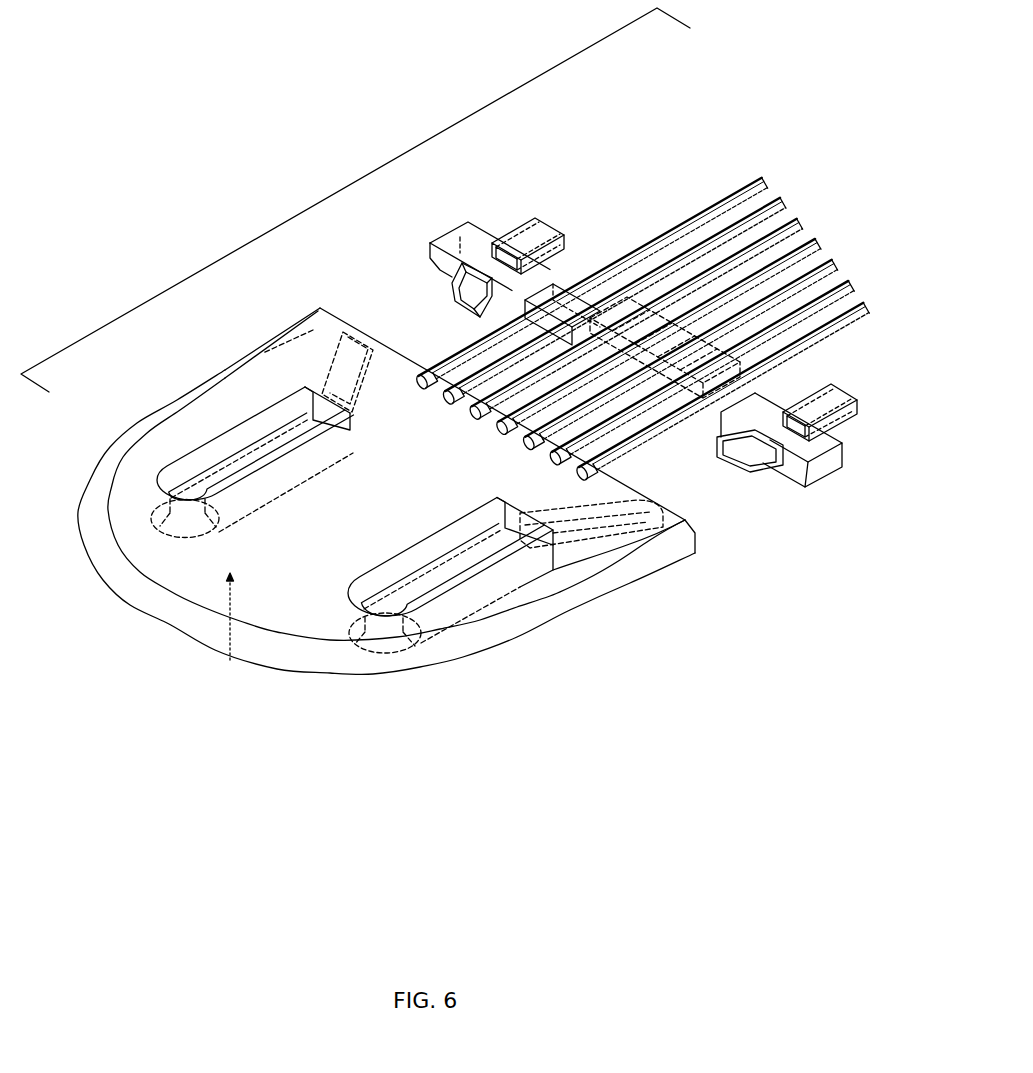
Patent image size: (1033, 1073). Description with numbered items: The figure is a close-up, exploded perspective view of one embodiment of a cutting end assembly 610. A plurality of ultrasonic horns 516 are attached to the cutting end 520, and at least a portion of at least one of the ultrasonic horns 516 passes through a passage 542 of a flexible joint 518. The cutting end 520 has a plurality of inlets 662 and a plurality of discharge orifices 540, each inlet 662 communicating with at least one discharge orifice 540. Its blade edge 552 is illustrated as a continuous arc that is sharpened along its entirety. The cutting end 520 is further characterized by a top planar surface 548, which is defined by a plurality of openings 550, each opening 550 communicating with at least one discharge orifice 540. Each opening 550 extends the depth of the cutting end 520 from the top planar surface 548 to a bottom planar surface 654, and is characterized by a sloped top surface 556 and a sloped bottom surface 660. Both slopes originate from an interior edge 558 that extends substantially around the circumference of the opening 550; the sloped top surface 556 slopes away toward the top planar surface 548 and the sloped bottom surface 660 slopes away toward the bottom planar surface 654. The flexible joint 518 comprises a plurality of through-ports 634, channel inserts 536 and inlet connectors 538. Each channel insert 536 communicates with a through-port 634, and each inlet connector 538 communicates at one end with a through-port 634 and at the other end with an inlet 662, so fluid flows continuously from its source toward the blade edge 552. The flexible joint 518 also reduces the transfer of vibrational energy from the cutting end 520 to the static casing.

The ultrasonic horns 516 is at (722, 204).
The flexible joint 518 is at (847, 478).
The cutting end 520 is at (133, 712).
The channel inserts 536 is at (537, 220).
The inlet connectors 538 is at (522, 325).
The discharge orifices 540 is at (312, 398).
The passage 542 is at (693, 422).
The top planar surface 548 is at (275, 608).
The openings 550 is at (225, 477).
The blade edge 552 is at (167, 623).
The sloped top surface 556 is at (248, 432).
The interior edge 558 is at (462, 590).
The cutting end assembly 610 is at (320, 177).
The through-ports 634 is at (462, 230).
The bottom planar surface 654 is at (230, 660).
The sloped bottom surface 660 is at (389, 647).
The inlets 662 is at (355, 347).